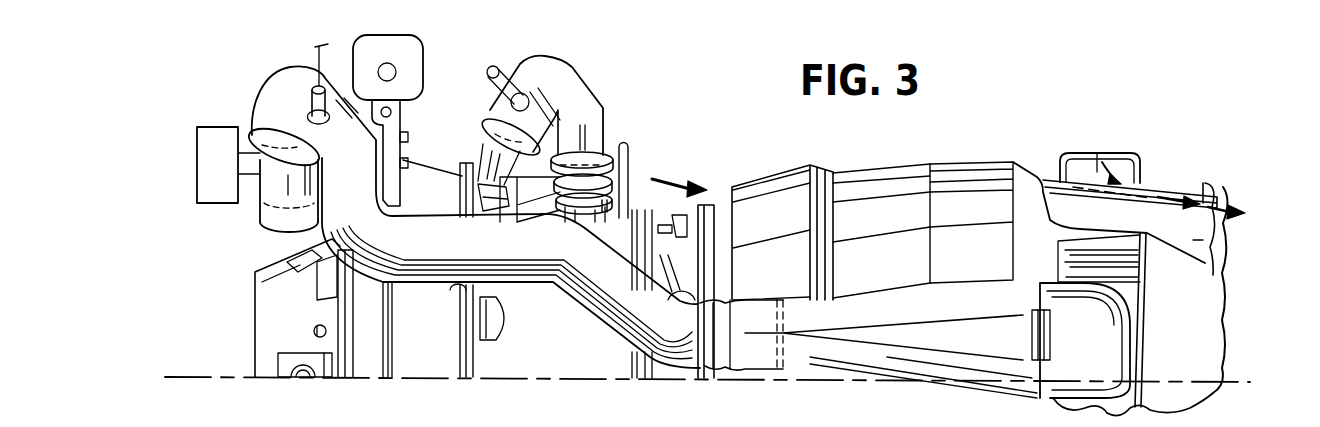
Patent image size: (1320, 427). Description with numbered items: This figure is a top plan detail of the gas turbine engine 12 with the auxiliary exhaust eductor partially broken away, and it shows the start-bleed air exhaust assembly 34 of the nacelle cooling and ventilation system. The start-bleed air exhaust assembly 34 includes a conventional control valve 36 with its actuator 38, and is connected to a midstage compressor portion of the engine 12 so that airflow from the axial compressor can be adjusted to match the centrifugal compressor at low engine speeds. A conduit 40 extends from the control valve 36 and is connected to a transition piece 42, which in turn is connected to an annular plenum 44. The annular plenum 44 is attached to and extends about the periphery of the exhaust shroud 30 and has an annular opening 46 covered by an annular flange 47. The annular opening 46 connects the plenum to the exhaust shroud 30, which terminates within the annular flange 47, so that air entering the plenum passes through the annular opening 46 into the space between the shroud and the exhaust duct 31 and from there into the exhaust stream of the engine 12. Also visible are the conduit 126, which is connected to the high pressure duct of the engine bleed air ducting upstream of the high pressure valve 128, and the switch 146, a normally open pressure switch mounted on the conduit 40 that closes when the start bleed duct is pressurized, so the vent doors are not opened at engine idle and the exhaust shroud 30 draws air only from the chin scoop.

The engine 12 is at (607, 372).
The exhaust shroud 30 is at (967, 172).
The exhaust duct 31 is at (1222, 243).
The start-bleed air exhaust assembly 34 is at (586, 318).
The control valve 36 is at (272, 190).
The actuator 38 is at (205, 178).
The conduit 40 is at (475, 251).
The transition piece 42 is at (917, 300).
The annular plenum 44 is at (1108, 152).
The annular opening 46 is at (1147, 186).
The annular flange 47 is at (1210, 192).
The conduit 126 is at (503, 58).
The high pressure valve 128 is at (590, 78).
The switch 146 is at (318, 62).